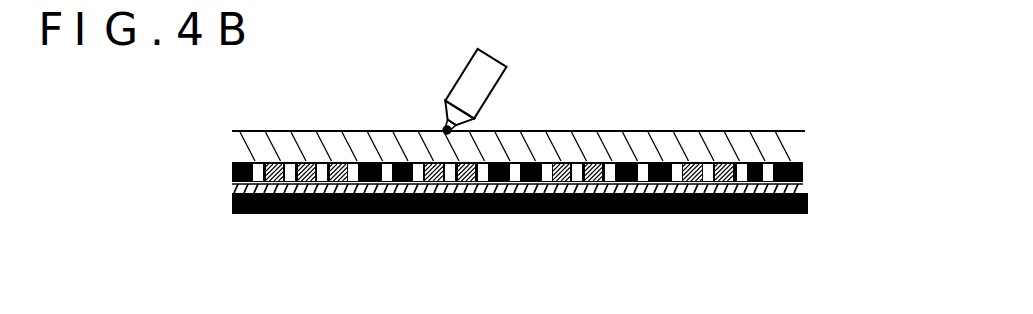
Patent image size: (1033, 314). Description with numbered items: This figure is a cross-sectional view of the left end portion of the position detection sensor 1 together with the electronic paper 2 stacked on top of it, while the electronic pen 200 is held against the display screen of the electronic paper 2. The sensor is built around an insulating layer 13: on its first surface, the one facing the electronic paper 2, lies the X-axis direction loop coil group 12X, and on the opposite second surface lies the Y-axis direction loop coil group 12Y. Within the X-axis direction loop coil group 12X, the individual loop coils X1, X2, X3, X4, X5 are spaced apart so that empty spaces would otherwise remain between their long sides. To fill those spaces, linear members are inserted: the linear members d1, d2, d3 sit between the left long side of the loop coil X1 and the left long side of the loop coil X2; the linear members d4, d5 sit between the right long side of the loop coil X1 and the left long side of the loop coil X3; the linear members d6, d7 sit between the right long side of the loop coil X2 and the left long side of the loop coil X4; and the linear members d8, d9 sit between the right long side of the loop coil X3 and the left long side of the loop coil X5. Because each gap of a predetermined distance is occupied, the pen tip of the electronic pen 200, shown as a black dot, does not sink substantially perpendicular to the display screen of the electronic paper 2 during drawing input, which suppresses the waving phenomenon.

The electronic pen 200 is at (465, 83).
The electronic paper 2 is at (233, 147).
The position detection sensor 1 is at (225, 162).
The X-axis direction loop coil group 12X is at (803, 175).
The insulating layer 13 is at (807, 188).
The Y-axis direction loop coil group 12Y is at (808, 208).
The loop coil X1 is at (245, 214).
The loop coil X2 is at (370, 214).
The loop coil X3 is at (500, 214).
The loop coil X4 is at (627, 214).
The loop coil X5 is at (755, 214).
The linear member d1 is at (275, 214).
The linear member d2 is at (307, 214).
The linear member d3 is at (338, 214).
The linear member d4 is at (435, 214).
The linear member d5 is at (468, 214).
The linear member d6 is at (562, 214).
The linear member d7 is at (595, 214).
The linear member d8 is at (693, 214).
The linear member d9 is at (723, 214).